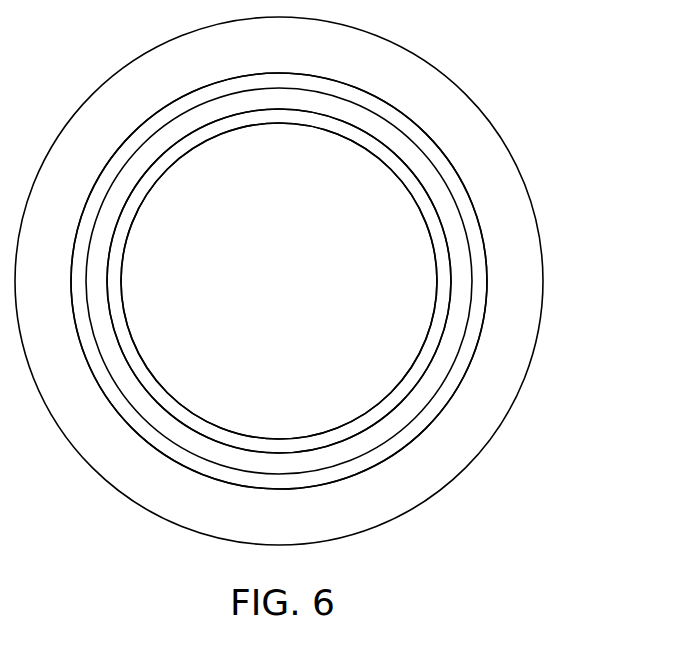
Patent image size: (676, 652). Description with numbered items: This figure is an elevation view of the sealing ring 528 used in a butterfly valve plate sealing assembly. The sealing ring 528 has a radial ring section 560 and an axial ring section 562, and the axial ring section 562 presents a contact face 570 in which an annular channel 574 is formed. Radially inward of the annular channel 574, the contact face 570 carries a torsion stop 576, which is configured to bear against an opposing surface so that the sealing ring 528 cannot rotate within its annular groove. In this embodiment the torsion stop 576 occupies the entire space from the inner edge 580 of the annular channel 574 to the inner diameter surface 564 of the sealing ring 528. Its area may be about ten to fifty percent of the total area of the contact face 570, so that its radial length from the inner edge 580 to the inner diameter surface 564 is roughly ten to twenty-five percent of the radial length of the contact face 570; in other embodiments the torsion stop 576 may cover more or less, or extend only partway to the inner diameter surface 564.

The sealing ring 528 is at (485, 124).
The radial ring section 560 is at (509, 195).
The axial ring section 562 is at (498, 285).
The contact face 570 is at (438, 402).
The annular channel 574 is at (455, 332).
The inner edge 580 is at (368, 432).
The inner diameter surface 564 is at (430, 242).
The torsion stop 576 is at (442, 286).